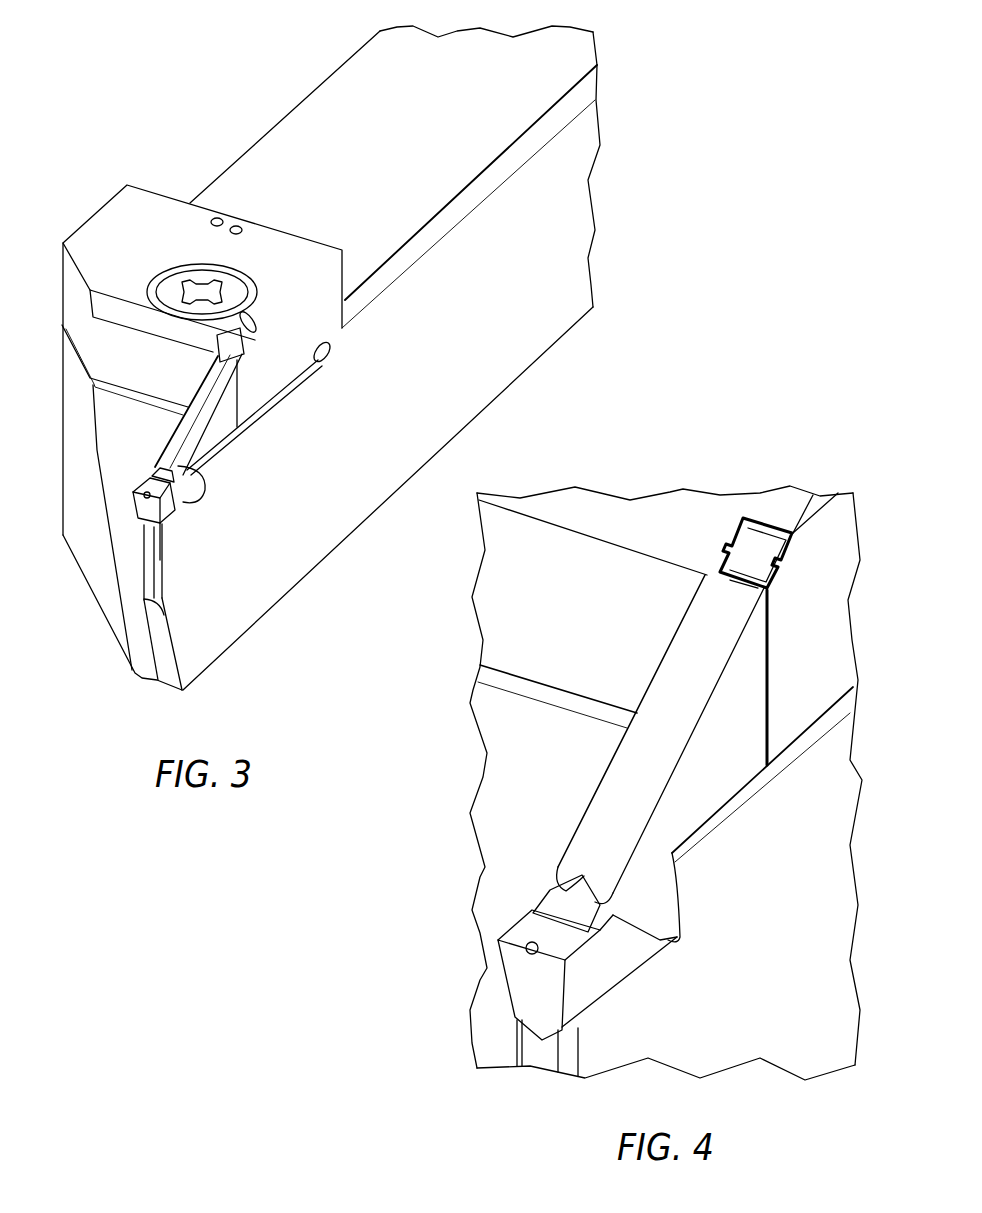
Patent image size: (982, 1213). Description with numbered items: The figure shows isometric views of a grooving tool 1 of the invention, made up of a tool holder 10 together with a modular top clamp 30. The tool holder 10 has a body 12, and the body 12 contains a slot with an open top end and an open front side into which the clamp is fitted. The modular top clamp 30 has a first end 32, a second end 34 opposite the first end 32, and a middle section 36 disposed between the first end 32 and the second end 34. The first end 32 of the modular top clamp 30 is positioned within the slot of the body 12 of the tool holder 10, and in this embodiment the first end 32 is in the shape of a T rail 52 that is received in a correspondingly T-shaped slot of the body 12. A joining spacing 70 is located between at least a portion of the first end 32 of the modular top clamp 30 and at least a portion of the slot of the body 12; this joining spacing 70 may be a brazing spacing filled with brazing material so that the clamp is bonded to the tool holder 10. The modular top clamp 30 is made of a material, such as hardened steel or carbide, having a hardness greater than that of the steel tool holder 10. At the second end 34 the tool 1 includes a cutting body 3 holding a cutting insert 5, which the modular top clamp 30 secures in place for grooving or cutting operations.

In FIG. 3, the tool 1 is at (636, 117).
In FIG. 3, the cutting body 3 is at (192, 512).
In FIG. 4, the cutting body 3 is at (637, 981).
In FIG. 3, the cutting insert 5 is at (147, 503).
In FIG. 4, the cutting insert 5 is at (508, 985).
In FIG. 4, the tool holder 10 is at (868, 630).
In FIG. 4, the body 12 is at (824, 617).
In FIG. 3, the modular top clamp 30 is at (244, 390).
In FIG. 4, the modular top clamp 30 is at (691, 674).
In FIG. 3, the first end 32 is at (248, 347).
In FIG. 3, the second end 34 is at (193, 478).
In FIG. 3, the middle section 36 is at (209, 423).
In FIG. 4, the T rail 52 is at (758, 543).
In FIG. 4, the joining spacing 70 is at (728, 540).